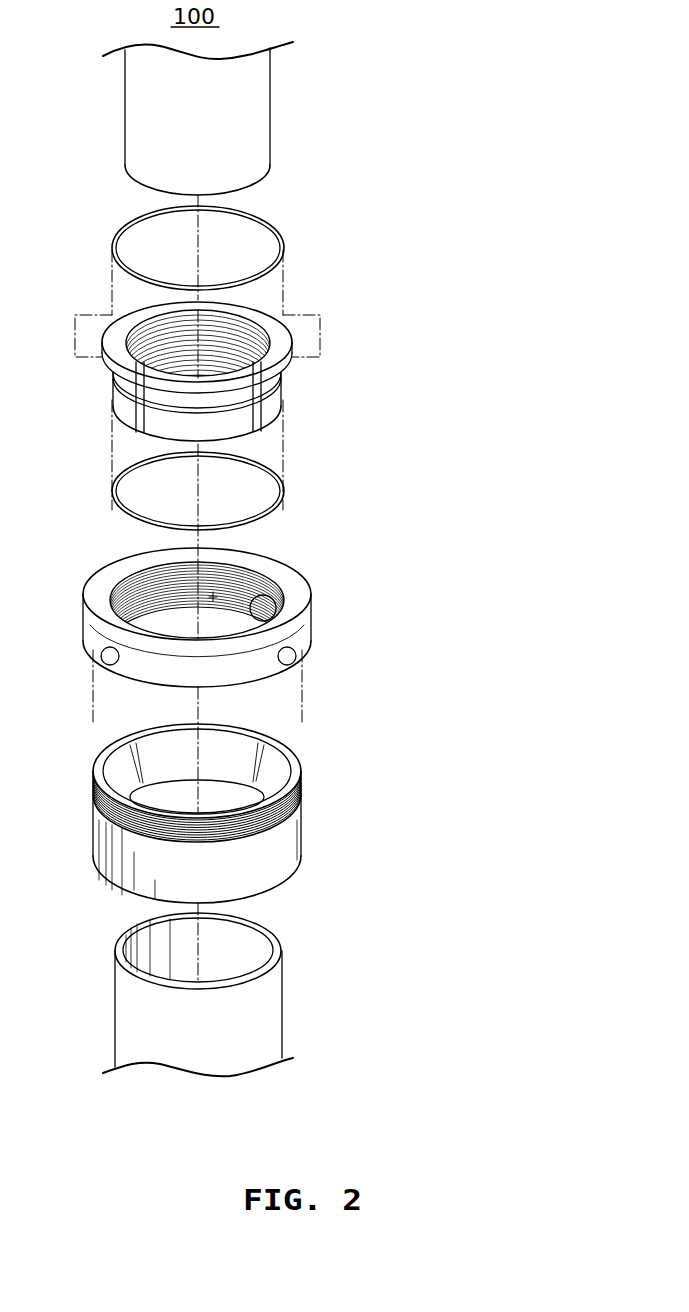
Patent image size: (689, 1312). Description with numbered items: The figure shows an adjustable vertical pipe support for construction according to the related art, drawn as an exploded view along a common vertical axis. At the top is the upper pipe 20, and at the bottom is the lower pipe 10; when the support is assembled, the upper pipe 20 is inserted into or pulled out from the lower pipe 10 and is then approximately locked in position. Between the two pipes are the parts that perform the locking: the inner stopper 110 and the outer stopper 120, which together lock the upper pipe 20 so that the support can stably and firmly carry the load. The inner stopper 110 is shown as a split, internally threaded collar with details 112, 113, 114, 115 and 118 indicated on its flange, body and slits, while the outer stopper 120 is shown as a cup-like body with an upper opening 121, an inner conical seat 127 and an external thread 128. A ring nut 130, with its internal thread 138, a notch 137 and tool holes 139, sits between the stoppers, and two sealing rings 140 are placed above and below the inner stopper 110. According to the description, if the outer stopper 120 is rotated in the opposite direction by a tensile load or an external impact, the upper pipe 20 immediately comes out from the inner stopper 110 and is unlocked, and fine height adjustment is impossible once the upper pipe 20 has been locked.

The lower pipe 10 is at (246, 994).
The upper pipe 20 is at (241, 118).
The inner stopper 110 is at (304, 360).
The thread portion of clamp 112 is at (287, 376).
The flange of clamp 113 is at (295, 338).
The lower body of clamp 114 is at (270, 437).
The inner hole of clamp 115 is at (250, 300).
The groove of clamp 118 is at (277, 417).
The outer stopper 120 is at (303, 813).
The upper opening of body 121 is at (257, 730).
The conical seat of body 127 is at (240, 758).
The external thread of body 128 is at (240, 790).
The nut member 130 is at (294, 617).
The notch of nut 137 is at (277, 618).
The internal thread of nut 138 is at (277, 578).
The tool hole of nut 139 is at (253, 617).
The sealing ring 140 is at (262, 368).